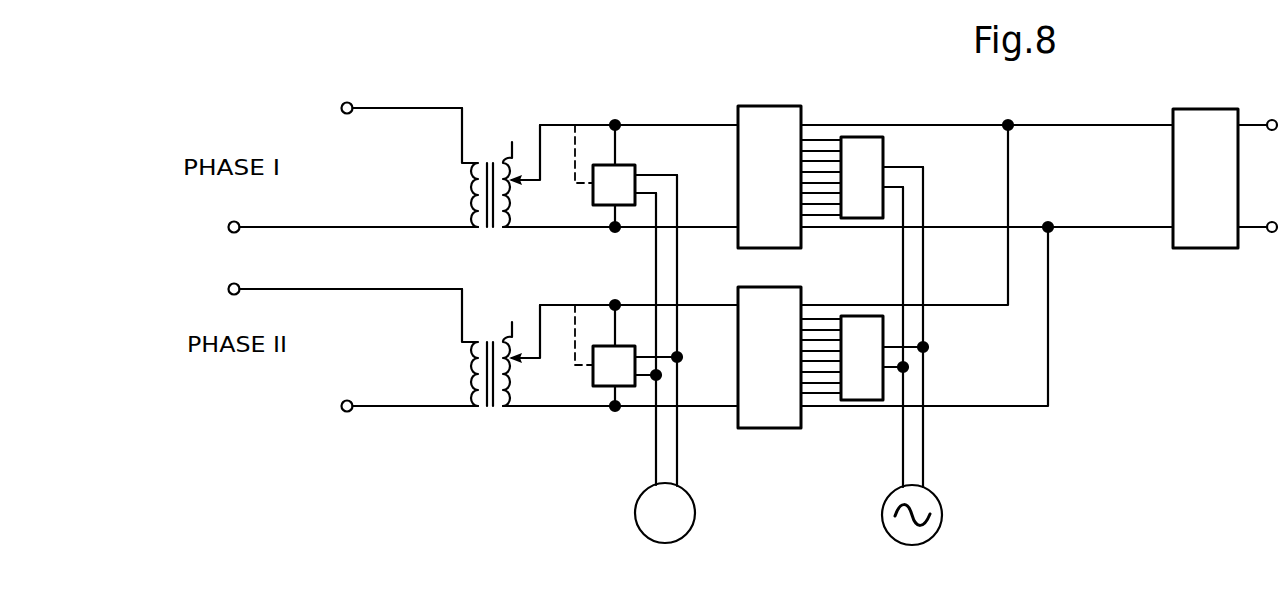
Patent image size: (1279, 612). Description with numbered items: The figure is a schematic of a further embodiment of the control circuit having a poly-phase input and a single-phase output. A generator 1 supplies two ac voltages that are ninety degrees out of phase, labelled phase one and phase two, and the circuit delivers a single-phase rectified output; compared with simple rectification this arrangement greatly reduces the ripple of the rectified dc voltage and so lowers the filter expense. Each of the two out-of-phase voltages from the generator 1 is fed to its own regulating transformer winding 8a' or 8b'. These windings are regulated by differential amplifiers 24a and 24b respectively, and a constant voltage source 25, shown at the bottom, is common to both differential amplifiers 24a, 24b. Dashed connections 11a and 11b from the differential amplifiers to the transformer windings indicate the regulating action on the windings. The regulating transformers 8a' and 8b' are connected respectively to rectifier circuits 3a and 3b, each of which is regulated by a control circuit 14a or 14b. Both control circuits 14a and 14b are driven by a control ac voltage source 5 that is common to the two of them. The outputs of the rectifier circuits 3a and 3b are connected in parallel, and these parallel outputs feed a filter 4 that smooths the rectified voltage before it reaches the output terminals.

The generator 1 is at (226, 258).
The regulating transformer winding 8a' is at (498, 185).
The regulating transformer winding 8b' is at (489, 371).
The secondary winding tap phase I 11a is at (575, 167).
The secondary winding tap phase II 11b is at (574, 350).
The differential amplifier 24a is at (617, 182).
The differential amplifier 24b is at (607, 363).
The rectifier circuit 3a is at (789, 177).
The rectifier circuit 3b is at (789, 357).
The control circuit 14a is at (882, 177).
The control circuit 14b is at (884, 358).
The filter 4 is at (1225, 178).
The constant voltage source 25 is at (635, 516).
The control ac voltage source 5 is at (886, 525).